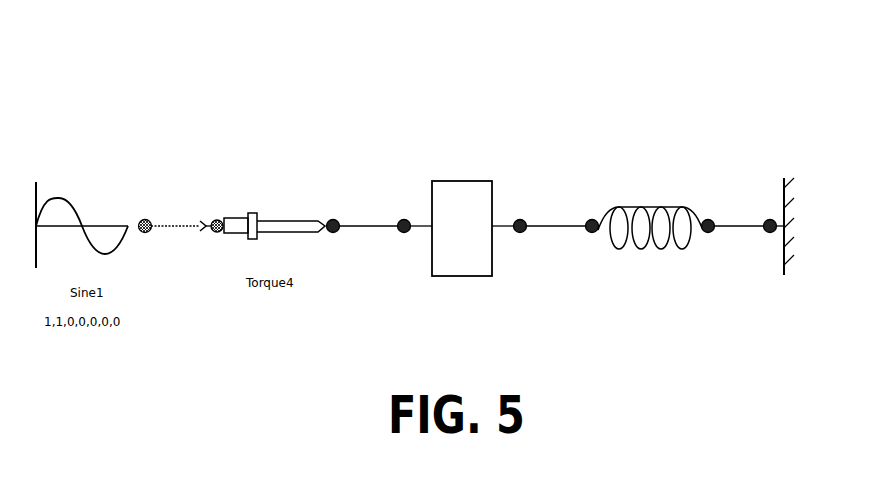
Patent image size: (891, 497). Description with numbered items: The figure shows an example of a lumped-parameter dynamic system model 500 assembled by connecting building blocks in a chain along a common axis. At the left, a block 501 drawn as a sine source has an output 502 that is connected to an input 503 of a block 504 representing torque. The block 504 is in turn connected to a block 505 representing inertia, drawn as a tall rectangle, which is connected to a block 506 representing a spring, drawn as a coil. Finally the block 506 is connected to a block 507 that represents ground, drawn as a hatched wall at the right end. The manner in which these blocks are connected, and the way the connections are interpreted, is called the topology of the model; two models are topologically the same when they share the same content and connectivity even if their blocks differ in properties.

The lumped-parameter dynamic system model 500 is at (620, 77).
The block 501 is at (78, 208).
The output 502 is at (146, 217).
The input 503 is at (228, 217).
The block representing torque 504 is at (296, 215).
The block representing inertia 505 is at (463, 172).
The block representing a spring 506 is at (658, 190).
The block representing ground 507 is at (790, 172).